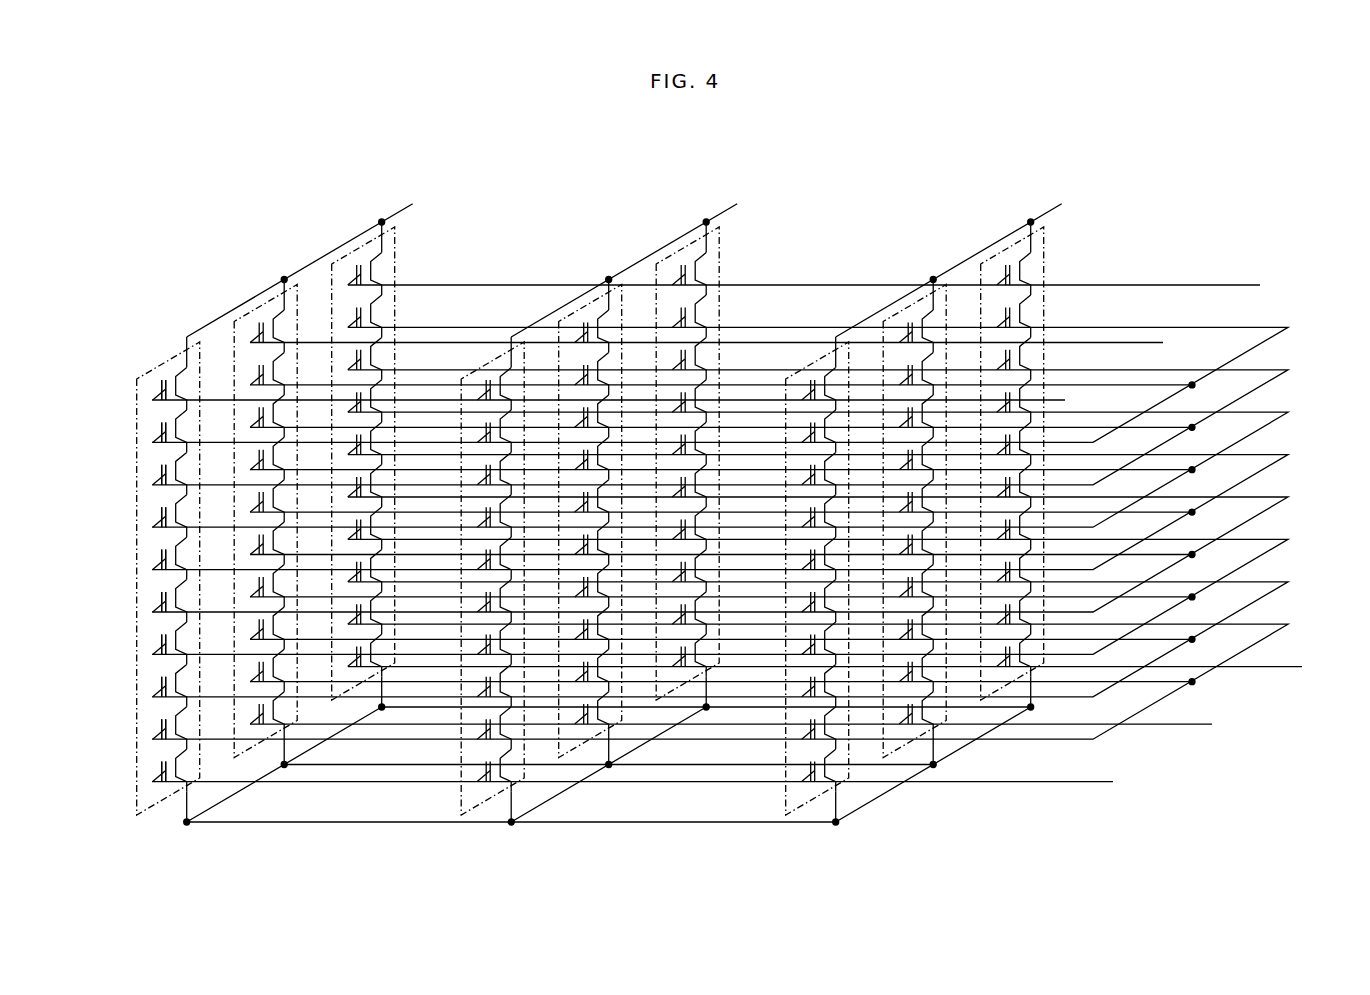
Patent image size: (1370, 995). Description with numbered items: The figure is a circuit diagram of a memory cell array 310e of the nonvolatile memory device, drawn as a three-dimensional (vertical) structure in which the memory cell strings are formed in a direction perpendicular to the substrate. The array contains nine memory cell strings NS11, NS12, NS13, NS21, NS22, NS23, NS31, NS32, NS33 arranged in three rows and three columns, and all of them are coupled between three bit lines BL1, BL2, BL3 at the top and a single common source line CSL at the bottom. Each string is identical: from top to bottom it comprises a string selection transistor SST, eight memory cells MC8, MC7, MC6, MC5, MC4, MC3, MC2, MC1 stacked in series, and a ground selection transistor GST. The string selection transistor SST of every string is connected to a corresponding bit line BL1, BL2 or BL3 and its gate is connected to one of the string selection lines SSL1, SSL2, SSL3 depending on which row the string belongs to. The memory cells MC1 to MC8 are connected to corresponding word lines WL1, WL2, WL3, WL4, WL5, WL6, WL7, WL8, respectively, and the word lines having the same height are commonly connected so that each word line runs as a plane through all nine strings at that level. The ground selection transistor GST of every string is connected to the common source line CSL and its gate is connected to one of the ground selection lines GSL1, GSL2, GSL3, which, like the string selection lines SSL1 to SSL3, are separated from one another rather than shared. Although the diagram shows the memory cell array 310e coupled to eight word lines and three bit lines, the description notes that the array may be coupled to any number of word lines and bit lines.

The memory block 310e is at (738, 147).
The bit line BL1 is at (316, 259).
The bit line BL2 is at (640, 259).
The bit line BL3 is at (965, 259).
The memory cell string NS11 is at (167, 363).
The memory cell string NS12 is at (493, 365).
The memory cell string NS13 is at (818, 365).
The memory cell string NS21 is at (263, 308).
The memory cell string NS22 is at (589, 308).
The memory cell string NS23 is at (913, 308).
The memory cell string NS31 is at (360, 252).
The memory cell string NS32 is at (684, 252).
The memory cell string NS33 is at (1009, 252).
The string selection transistor SST is at (155, 386).
The ground selection transistor GST is at (155, 768).
The memory cell MC1 is at (155, 725).
The memory cell MC2 is at (155, 683).
The memory cell MC3 is at (155, 640).
The memory cell MC4 is at (155, 598).
The memory cell MC5 is at (155, 556).
The memory cell MC6 is at (155, 513).
The memory cell MC7 is at (155, 471).
The memory cell MC8 is at (155, 428).
The word line WL1 is at (1192, 682).
The word line WL2 is at (1192, 639).
The word line WL3 is at (1192, 597).
The word line WL4 is at (1192, 554).
The word line WL5 is at (1192, 512).
The word line WL6 is at (1192, 470).
The word line WL7 is at (1192, 427).
The word line WL8 is at (1192, 385).
The string selection line SSL1 is at (636, 400).
The string selection line SSL2 is at (734, 342).
The string selection line SSL3 is at (834, 285).
The ground selection line GSL1 is at (664, 781).
The ground selection line GSL2 is at (763, 724).
The ground selection line GSL3 is at (856, 666).
The common source line CSL is at (933, 764).